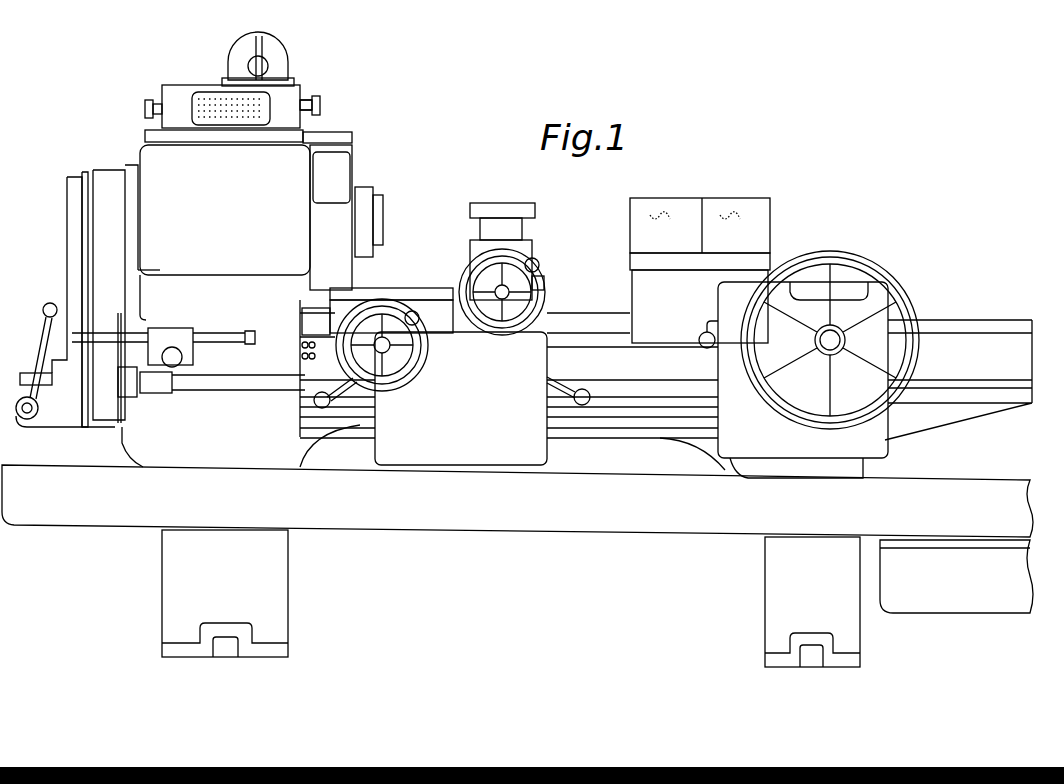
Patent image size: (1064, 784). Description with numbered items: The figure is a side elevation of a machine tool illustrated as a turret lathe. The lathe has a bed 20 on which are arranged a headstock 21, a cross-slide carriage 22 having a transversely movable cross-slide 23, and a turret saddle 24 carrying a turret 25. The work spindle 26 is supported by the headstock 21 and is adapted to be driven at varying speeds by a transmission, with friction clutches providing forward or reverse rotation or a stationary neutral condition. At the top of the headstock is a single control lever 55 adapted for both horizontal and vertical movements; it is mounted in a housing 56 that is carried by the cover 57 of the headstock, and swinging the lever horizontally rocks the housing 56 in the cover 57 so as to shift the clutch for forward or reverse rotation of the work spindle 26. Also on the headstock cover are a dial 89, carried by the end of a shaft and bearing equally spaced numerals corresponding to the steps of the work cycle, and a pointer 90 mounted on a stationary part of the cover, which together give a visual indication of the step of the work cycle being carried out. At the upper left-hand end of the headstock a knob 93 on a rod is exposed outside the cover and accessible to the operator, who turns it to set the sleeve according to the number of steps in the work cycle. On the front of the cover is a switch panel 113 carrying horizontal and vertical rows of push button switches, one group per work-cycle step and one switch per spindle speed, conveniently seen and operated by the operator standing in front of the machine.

The bed 20 is at (960, 322).
The headstock 21 is at (133, 163).
The cross-slide carriage 22 is at (403, 290).
The cross-slide 23 is at (535, 250).
The turret saddle 24 is at (905, 290).
The turret 25 is at (760, 228).
The work spindle 26 is at (378, 212).
The control lever 55 is at (268, 66).
The housing 56 is at (278, 48).
The cover 57 is at (172, 86).
The dial 89 is at (322, 105).
The pointer 90 is at (305, 100).
The knob 93 is at (148, 103).
The switch panel 113 is at (203, 93).